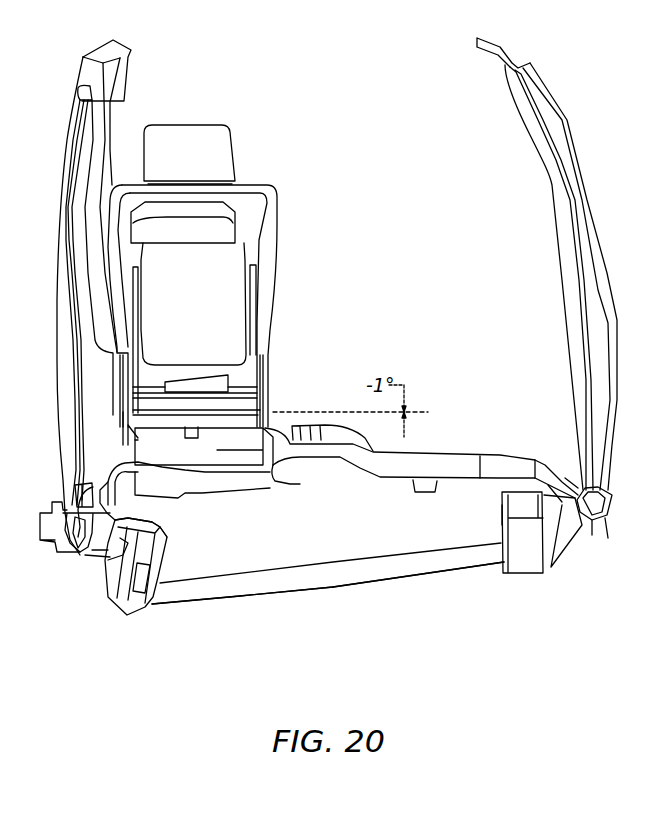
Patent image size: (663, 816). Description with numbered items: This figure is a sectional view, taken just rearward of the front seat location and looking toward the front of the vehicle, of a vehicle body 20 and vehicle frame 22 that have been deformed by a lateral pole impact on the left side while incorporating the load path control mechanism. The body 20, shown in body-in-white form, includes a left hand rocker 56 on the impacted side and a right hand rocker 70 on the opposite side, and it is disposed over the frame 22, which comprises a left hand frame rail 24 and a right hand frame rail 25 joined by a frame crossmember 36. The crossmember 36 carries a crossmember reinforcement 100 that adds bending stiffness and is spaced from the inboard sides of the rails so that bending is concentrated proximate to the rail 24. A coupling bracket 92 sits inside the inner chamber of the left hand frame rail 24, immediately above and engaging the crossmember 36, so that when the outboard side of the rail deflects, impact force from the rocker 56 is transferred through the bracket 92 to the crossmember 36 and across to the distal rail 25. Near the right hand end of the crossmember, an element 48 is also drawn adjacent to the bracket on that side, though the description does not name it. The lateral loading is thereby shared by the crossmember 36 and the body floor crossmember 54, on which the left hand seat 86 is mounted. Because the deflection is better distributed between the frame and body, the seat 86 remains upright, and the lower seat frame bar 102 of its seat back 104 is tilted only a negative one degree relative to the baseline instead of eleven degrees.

The vehicle body 20 is at (60, 305).
The left hand seat 86 is at (278, 217).
The seat back 104 is at (255, 297).
The lower seat frame bar 102 is at (222, 410).
The floor crossmember 54 is at (434, 452).
The right hand frame rail 25 is at (504, 514).
The left hand frame rail 24 is at (168, 537).
The coupling bracket 92 is at (163, 578).
The left hand rocker 56 is at (80, 557).
The vehicle frame 22 is at (220, 606).
The frame crossmember 36 is at (319, 598).
The crossmember reinforcement 100 is at (398, 567).
The wedge bracket 48 is at (568, 533).
The right hand rocker 70 is at (606, 523).